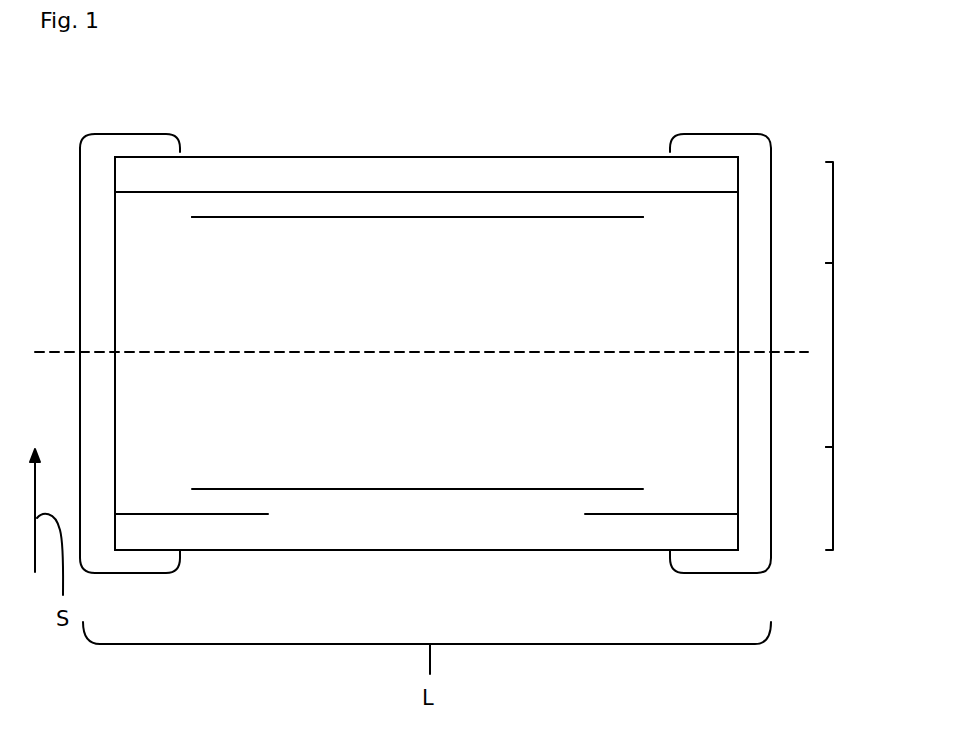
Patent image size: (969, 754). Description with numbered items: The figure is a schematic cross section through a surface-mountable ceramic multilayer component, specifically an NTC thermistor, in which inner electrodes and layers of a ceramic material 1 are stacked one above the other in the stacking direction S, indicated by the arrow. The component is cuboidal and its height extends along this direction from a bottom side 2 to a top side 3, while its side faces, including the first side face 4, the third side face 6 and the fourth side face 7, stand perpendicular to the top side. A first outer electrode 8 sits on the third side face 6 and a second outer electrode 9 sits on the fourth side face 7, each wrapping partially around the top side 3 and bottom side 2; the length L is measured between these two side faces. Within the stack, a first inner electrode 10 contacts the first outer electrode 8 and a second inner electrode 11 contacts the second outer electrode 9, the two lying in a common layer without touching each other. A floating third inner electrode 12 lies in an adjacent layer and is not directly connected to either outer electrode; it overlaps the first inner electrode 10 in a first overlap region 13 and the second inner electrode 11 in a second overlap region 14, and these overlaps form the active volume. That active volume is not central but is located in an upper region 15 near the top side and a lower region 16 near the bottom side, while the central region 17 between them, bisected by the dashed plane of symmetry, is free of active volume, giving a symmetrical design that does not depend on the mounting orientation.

The ceramic material layers 1 is at (710, 282).
The bottom side 2 is at (375, 550).
The top side 3 is at (380, 157).
The first side face 4 is at (473, 185).
The third side face 6 is at (115, 378).
The fourth side face 7 is at (736, 386).
The first outer electrode 8 is at (93, 177).
The second outer electrode 9 is at (763, 172).
The first inner electrode 10 is at (205, 188).
The second inner electrode 11 is at (620, 208).
The third inner electrode 12 is at (527, 217).
The first overlap region 13 is at (223, 205).
The second overlap region 14 is at (622, 192).
The upper region 15 is at (833, 212).
The lower region 16 is at (833, 498).
The central region 17 is at (833, 352).